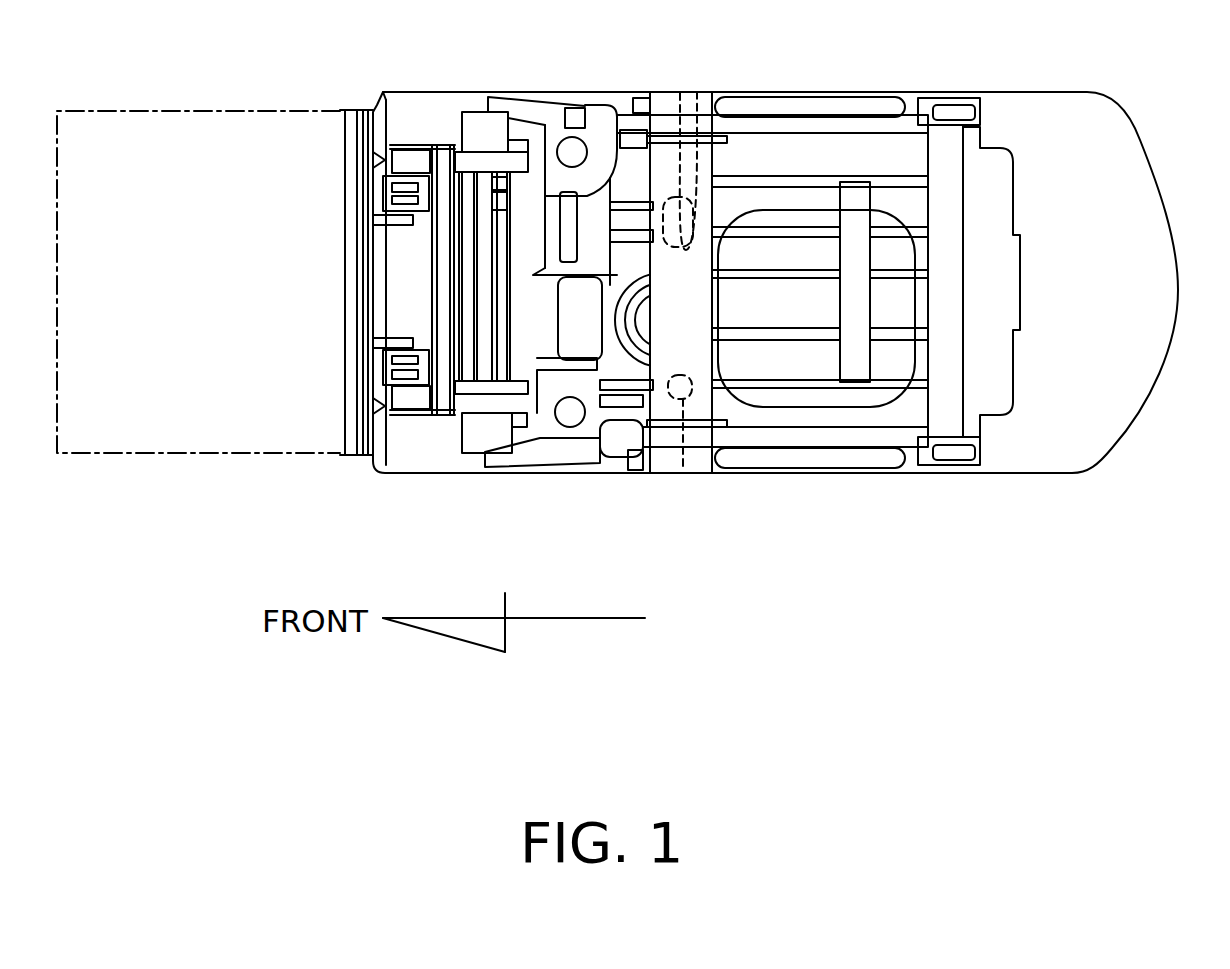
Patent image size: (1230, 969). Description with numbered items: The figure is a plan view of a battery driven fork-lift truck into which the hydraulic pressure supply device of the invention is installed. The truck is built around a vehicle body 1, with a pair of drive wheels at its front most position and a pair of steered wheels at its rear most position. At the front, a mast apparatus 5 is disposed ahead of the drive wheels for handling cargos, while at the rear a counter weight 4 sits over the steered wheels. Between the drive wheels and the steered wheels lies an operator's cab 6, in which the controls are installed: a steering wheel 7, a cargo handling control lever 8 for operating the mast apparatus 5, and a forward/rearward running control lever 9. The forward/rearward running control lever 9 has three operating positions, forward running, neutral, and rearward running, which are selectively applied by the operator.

The vehicle body 1 is at (750, 496).
The counter weight 4 is at (1097, 123).
The mast apparatus 5 is at (413, 444).
The operator's cab 6 is at (882, 215).
The steering wheel 7 is at (628, 440).
The cargo handling control lever 8 is at (684, 92).
The forward/rearward running control lever 9 is at (684, 440).